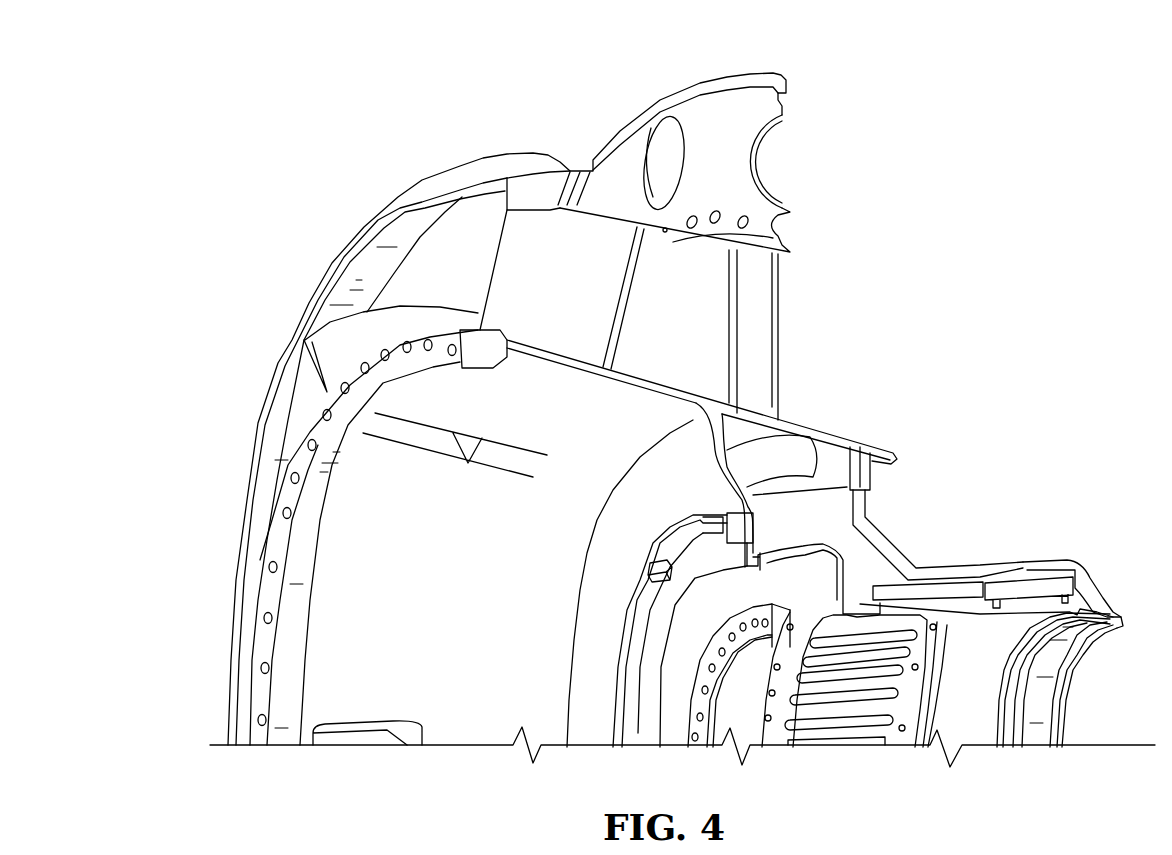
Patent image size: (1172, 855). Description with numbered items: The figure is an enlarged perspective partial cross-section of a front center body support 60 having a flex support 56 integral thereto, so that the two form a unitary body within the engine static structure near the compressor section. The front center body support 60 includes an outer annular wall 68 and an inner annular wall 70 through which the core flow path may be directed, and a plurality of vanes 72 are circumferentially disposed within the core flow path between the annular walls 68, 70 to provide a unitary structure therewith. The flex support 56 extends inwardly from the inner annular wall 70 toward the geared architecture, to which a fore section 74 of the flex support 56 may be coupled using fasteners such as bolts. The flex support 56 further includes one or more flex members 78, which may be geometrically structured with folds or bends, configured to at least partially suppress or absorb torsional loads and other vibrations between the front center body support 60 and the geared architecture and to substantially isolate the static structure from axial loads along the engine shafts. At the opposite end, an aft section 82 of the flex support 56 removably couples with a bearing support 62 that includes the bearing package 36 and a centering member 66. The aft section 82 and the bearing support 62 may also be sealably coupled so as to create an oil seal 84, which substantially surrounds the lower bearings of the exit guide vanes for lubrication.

The bearing package 36 is at (1005, 560).
The flex support 56 is at (913, 340).
The front center body support 60 is at (787, 357).
The bearing support 62 is at (917, 557).
The centering member 66 is at (905, 698).
The outer annular wall 68 is at (688, 238).
The inner annular wall 70 is at (677, 387).
The vanes 72 is at (778, 295).
The fore section 74 is at (713, 708).
The flex member 78 is at (852, 555).
The aft section 82 is at (813, 427).
The oil seal 84 is at (823, 467).